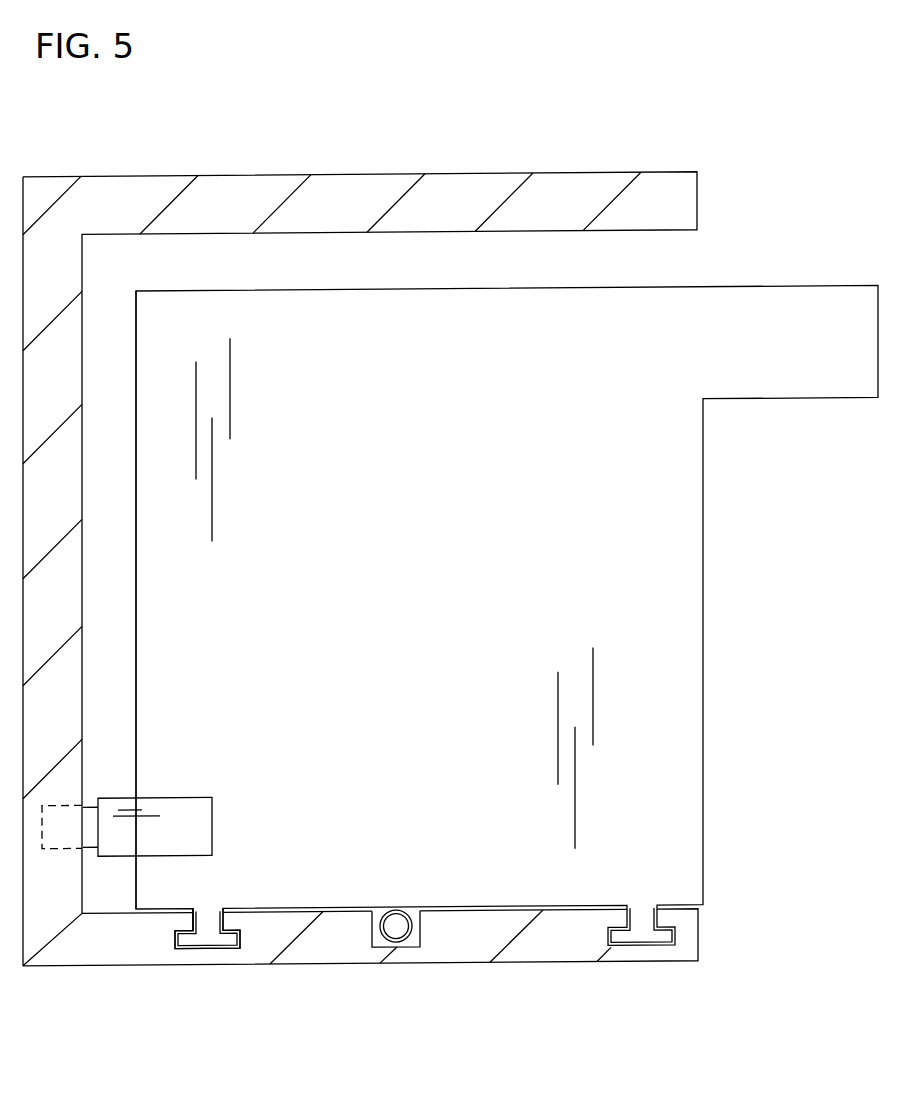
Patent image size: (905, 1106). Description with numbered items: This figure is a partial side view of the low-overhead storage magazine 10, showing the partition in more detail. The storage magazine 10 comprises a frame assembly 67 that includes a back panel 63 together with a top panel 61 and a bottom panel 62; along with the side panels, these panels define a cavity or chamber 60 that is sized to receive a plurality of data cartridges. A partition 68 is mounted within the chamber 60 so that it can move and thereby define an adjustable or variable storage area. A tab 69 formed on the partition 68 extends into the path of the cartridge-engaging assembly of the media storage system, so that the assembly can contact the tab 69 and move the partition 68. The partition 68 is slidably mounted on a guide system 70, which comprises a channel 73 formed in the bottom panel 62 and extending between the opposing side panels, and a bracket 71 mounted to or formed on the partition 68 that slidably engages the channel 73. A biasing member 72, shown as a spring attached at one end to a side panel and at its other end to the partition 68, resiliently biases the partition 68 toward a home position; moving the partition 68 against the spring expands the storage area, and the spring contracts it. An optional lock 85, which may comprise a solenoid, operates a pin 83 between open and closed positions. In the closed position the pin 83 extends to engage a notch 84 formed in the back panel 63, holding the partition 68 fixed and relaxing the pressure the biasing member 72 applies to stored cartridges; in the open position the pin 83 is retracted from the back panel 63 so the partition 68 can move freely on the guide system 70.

The storage magazine 10 is at (450, 573).
The chamber 60 is at (487, 600).
The top panel 61 is at (305, 237).
The bottom panel 62 is at (415, 965).
The back panel 63 is at (83, 688).
The frame assembly 67 is at (615, 173).
The partition 68 is at (507, 651).
The tab 69 is at (794, 291).
The guide system 70 is at (195, 968).
The bracket 71 is at (241, 940).
The biasing member 72 is at (372, 945).
The channel 73 is at (173, 943).
The pin 83 is at (88, 801).
The notch 84 is at (70, 848).
The lock 85 is at (174, 793).